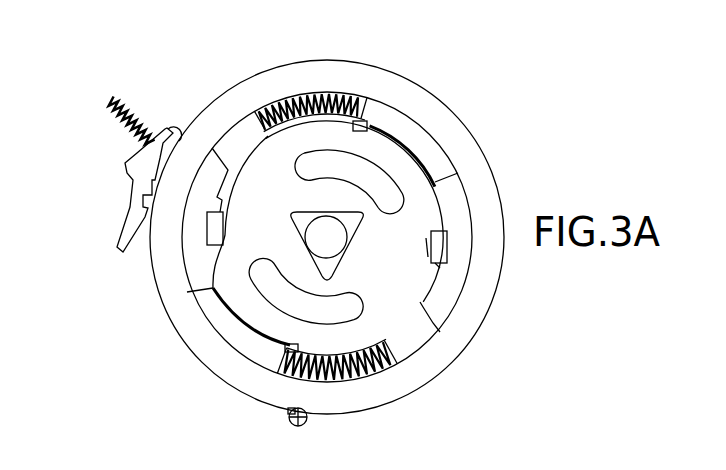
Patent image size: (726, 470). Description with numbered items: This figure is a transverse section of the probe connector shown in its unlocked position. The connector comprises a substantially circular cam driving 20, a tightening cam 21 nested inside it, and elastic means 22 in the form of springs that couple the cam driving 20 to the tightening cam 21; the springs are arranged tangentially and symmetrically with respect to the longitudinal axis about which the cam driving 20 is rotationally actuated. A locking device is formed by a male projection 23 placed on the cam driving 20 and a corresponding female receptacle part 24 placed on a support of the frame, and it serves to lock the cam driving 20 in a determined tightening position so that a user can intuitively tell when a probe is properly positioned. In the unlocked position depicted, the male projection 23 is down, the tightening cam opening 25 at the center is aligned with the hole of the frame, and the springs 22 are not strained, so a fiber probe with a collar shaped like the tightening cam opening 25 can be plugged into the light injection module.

The cam driving 20 is at (440, 115).
The tightening cam 21 is at (400, 270).
The elastic means 22 is at (380, 361).
The male projection 23 is at (281, 410).
The female receptacle part 24 is at (137, 217).
The tightening cam opening 25 is at (298, 227).